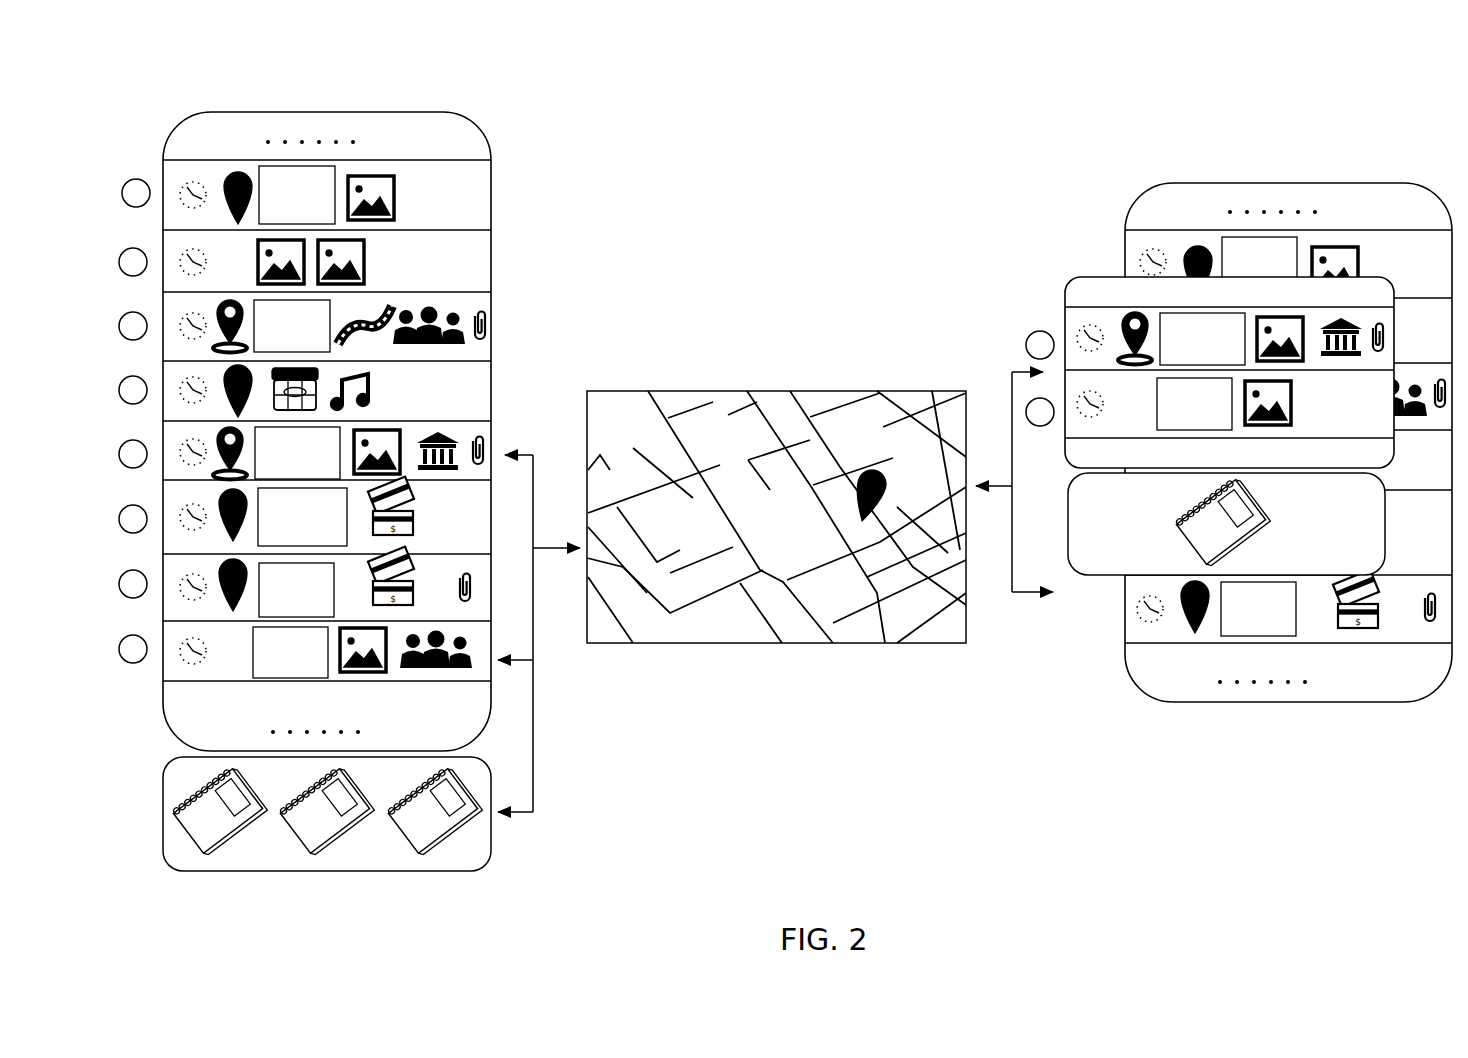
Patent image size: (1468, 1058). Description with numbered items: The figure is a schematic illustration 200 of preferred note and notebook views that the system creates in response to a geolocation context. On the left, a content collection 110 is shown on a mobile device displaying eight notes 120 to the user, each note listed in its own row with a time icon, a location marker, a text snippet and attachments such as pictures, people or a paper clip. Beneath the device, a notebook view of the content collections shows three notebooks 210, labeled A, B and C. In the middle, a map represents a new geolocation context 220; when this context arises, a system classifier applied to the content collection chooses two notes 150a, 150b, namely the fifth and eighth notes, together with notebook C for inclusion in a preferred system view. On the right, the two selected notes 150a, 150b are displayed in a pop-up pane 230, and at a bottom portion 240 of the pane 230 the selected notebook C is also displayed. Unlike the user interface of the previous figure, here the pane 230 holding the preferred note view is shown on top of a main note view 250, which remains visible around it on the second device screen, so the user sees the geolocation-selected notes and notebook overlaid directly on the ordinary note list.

The content collection 110 is at (325, 111).
The notes 120 is at (133, 181).
The selected note 150a is at (162, 433).
The selected note 150b is at (162, 683).
The schematic illustration 200 is at (1247, 143).
The notebooks 210 is at (178, 792).
The geolocation context 220 is at (823, 386).
The pop-up pane 230 is at (505, 438).
The bottom portion 240 is at (1135, 545).
The main note view 250 is at (1122, 657).